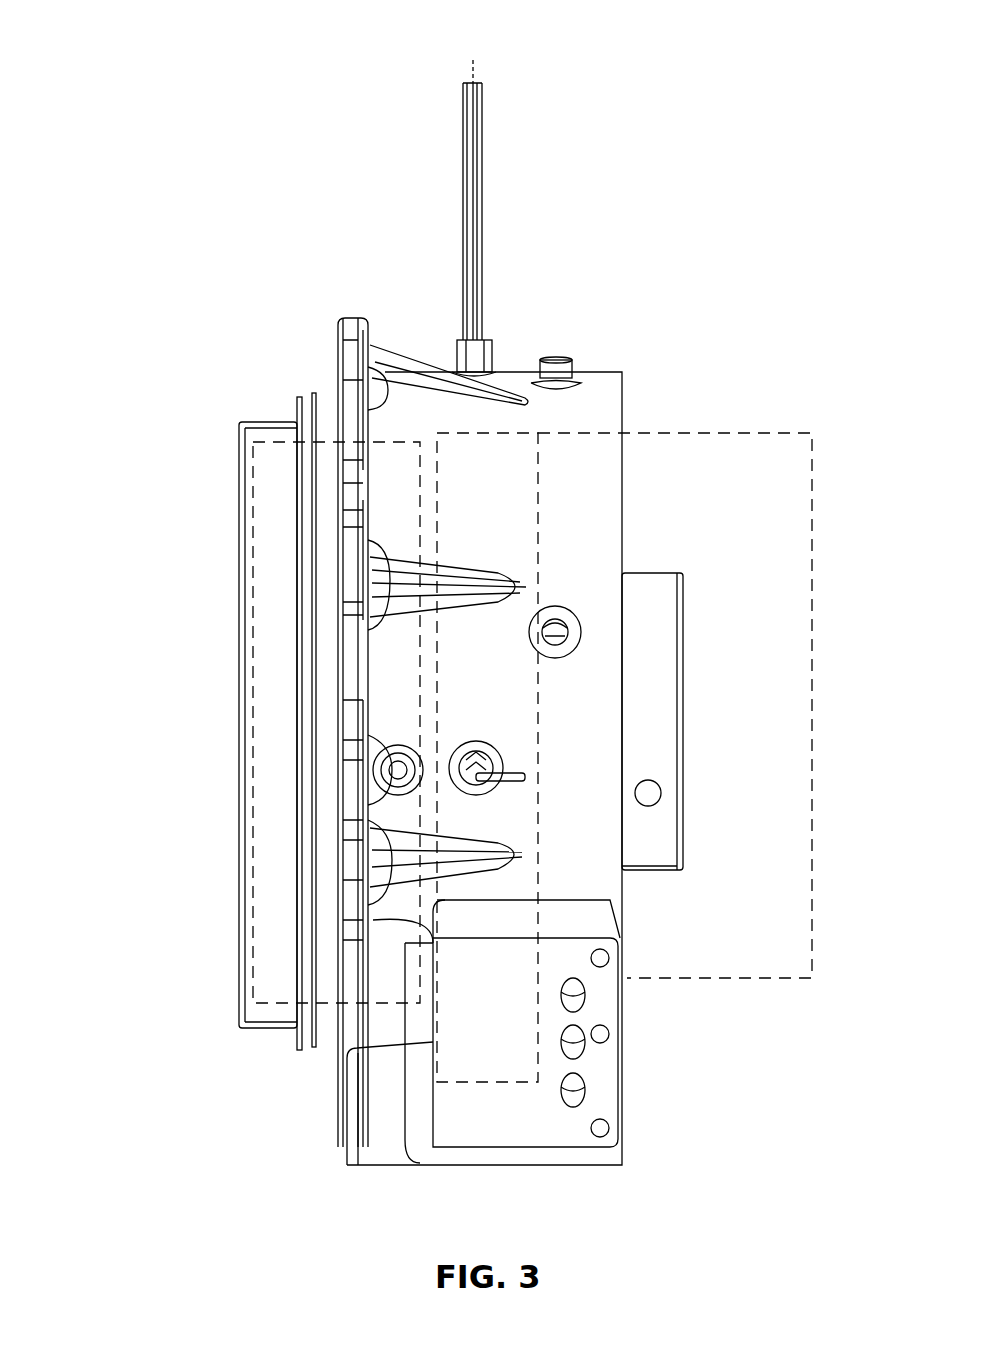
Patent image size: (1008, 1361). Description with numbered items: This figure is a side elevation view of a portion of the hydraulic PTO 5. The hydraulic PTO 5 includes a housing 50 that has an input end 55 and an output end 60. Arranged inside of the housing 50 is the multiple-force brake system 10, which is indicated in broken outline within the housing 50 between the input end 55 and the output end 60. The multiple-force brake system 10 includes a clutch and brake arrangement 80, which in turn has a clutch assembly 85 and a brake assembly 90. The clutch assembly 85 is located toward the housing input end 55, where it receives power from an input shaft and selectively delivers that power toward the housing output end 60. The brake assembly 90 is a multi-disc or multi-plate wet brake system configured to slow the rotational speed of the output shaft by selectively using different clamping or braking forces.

The hydraulic PTO 5 is at (608, 98).
The multiple-force brake system 10 is at (422, 437).
The housing 50 is at (300, 1190).
The input end 55 is at (97, 255).
The output end 60 is at (782, 232).
The clutch and brake arrangement 80 is at (428, 458).
The clutch assembly 85 is at (278, 448).
The brake assembly 90 is at (522, 493).